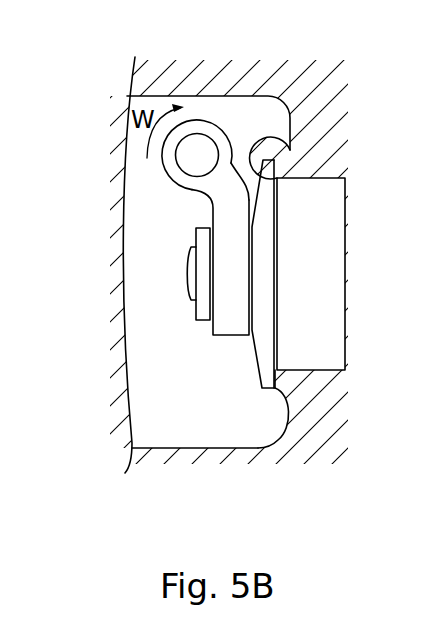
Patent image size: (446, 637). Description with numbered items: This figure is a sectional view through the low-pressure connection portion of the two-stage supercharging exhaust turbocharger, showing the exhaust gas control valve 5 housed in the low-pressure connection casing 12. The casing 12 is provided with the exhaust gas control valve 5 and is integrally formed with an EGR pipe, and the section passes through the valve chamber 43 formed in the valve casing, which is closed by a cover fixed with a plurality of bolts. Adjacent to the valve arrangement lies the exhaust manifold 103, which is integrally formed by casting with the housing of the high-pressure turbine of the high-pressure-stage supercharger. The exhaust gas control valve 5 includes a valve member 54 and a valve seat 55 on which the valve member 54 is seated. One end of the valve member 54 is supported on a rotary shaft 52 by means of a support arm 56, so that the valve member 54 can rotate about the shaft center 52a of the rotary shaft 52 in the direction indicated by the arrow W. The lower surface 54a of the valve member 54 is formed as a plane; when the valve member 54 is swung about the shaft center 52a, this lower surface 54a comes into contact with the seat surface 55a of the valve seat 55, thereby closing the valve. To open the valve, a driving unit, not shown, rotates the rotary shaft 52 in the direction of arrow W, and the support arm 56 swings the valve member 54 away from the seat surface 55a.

The exhaust gas control valve 5 is at (188, 323).
The low-pressure connection casing 12 is at (212, 457).
The valve chamber 43 is at (176, 311).
The rotary shaft 52 is at (168, 158).
The shaft center 52a is at (199, 152).
The valve member 54 is at (256, 364).
The lower surface 54a is at (275, 332).
The valve seat 55 is at (283, 388).
The seat surface 55a is at (282, 135).
The support arm 56 is at (224, 210).
The exhaust manifold 103 is at (336, 232).